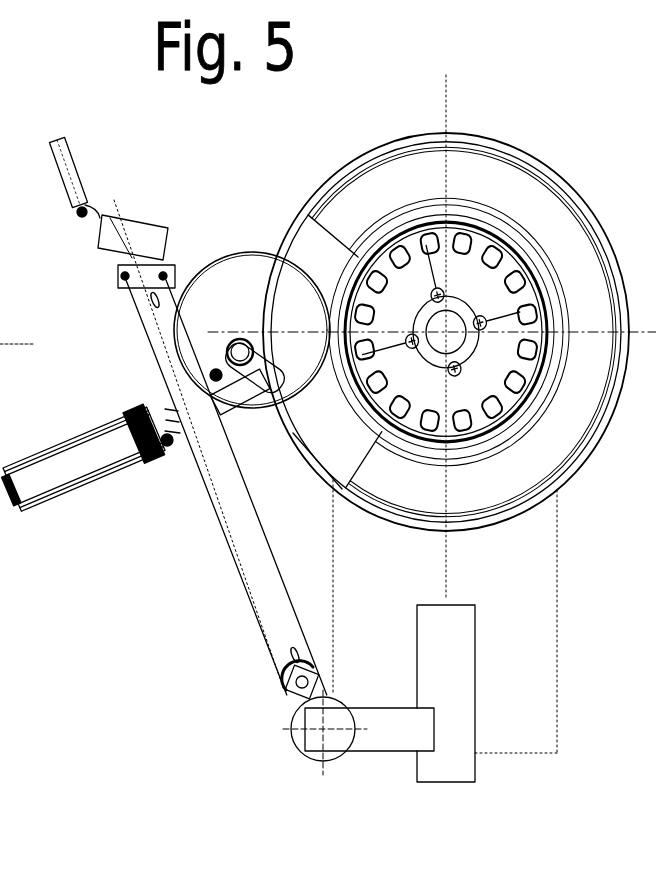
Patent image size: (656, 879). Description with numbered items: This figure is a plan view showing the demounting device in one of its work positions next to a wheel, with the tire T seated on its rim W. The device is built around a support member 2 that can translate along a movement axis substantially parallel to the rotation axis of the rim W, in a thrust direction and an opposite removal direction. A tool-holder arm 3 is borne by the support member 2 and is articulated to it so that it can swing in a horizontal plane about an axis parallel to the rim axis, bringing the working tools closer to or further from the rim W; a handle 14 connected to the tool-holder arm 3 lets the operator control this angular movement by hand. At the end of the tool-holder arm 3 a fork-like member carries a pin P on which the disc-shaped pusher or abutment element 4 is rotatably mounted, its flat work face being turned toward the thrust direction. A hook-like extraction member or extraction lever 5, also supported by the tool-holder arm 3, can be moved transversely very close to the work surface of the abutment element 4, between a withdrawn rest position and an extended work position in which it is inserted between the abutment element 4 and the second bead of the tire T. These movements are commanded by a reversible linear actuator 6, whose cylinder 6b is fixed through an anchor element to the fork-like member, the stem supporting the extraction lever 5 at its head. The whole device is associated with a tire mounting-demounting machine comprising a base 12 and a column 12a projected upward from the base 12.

The support member 2 is at (293, 740).
The tool-holder arm 3 is at (250, 600).
The pusher element or abutment element 4 is at (252, 283).
The hook-like extraction member or extraction lever 5 is at (247, 397).
The actuator 6 is at (62, 508).
The cylinder 6b is at (115, 478).
The base 12 is at (557, 640).
The column 12a is at (417, 765).
The handle 14 is at (77, 165).
The pin P is at (238, 340).
The tire T is at (417, 272).
The rim W is at (517, 150).